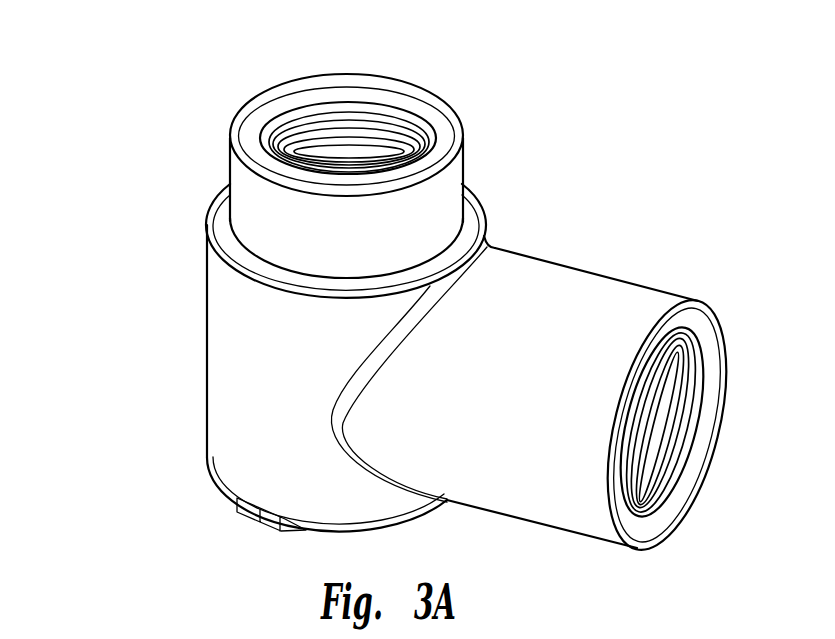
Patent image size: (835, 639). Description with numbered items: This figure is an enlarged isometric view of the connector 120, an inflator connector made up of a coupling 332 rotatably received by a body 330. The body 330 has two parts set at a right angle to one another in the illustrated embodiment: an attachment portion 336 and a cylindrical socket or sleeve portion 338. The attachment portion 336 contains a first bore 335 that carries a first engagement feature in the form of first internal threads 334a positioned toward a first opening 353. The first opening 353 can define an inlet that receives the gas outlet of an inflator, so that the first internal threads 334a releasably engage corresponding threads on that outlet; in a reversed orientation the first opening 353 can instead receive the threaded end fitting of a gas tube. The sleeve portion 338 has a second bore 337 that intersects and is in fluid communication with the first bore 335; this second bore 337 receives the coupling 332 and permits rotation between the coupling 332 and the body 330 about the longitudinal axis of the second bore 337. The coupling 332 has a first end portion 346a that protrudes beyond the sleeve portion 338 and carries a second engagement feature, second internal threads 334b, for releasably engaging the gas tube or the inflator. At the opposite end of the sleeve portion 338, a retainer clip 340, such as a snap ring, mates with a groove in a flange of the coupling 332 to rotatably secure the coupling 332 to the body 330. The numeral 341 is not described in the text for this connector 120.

The connector 120 is at (103, 298).
The body 330 is at (615, 242).
The coupling 332 is at (507, 153).
The first internal threads 334a is at (668, 467).
The second internal threads 334b is at (378, 113).
The first bore 335 is at (679, 413).
The attachment portion 336 is at (630, 280).
The second bore 337 is at (222, 216).
The sleeve portion 338 is at (210, 350).
The retainer clip 340 is at (282, 525).
The top rim 341 is at (309, 87).
The first end portion 346a is at (228, 168).
The first opening 353 is at (722, 378).